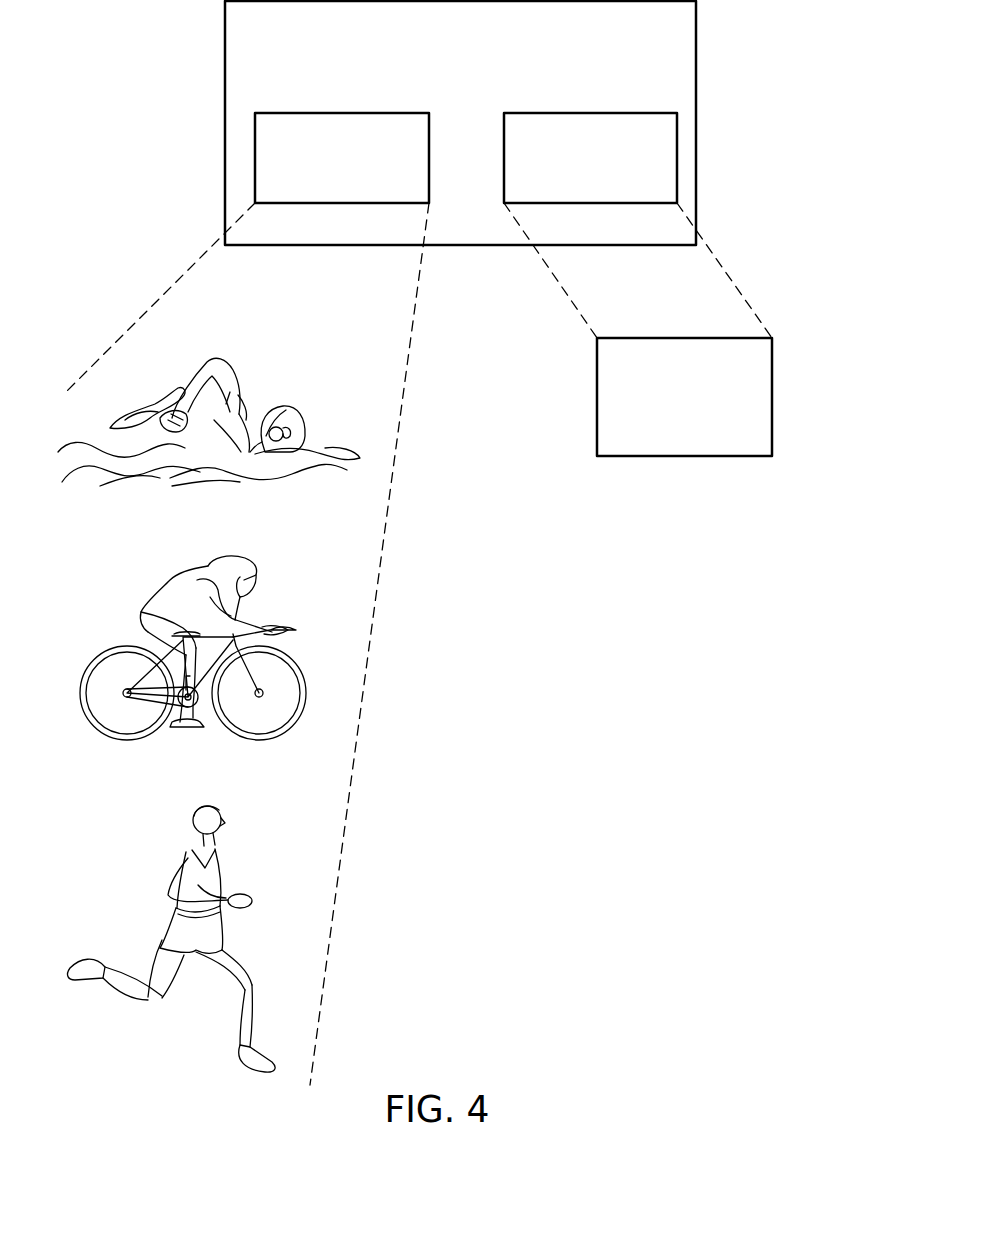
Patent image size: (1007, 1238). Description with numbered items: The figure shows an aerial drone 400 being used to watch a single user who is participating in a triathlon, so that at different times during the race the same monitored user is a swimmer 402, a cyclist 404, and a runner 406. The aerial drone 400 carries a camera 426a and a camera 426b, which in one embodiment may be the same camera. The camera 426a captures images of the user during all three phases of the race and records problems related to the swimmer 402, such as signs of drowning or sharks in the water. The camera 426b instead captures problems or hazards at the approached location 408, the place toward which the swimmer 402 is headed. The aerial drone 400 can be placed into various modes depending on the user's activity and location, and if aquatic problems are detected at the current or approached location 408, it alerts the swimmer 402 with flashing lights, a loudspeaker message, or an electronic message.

The aerial drone 400 is at (435, 90).
The camera 426a is at (372, 188).
The camera 426b is at (560, 188).
The approached location 408 is at (660, 438).
The swimmer 402 is at (306, 392).
The cyclist 404 is at (279, 594).
The runner 406 is at (243, 855).